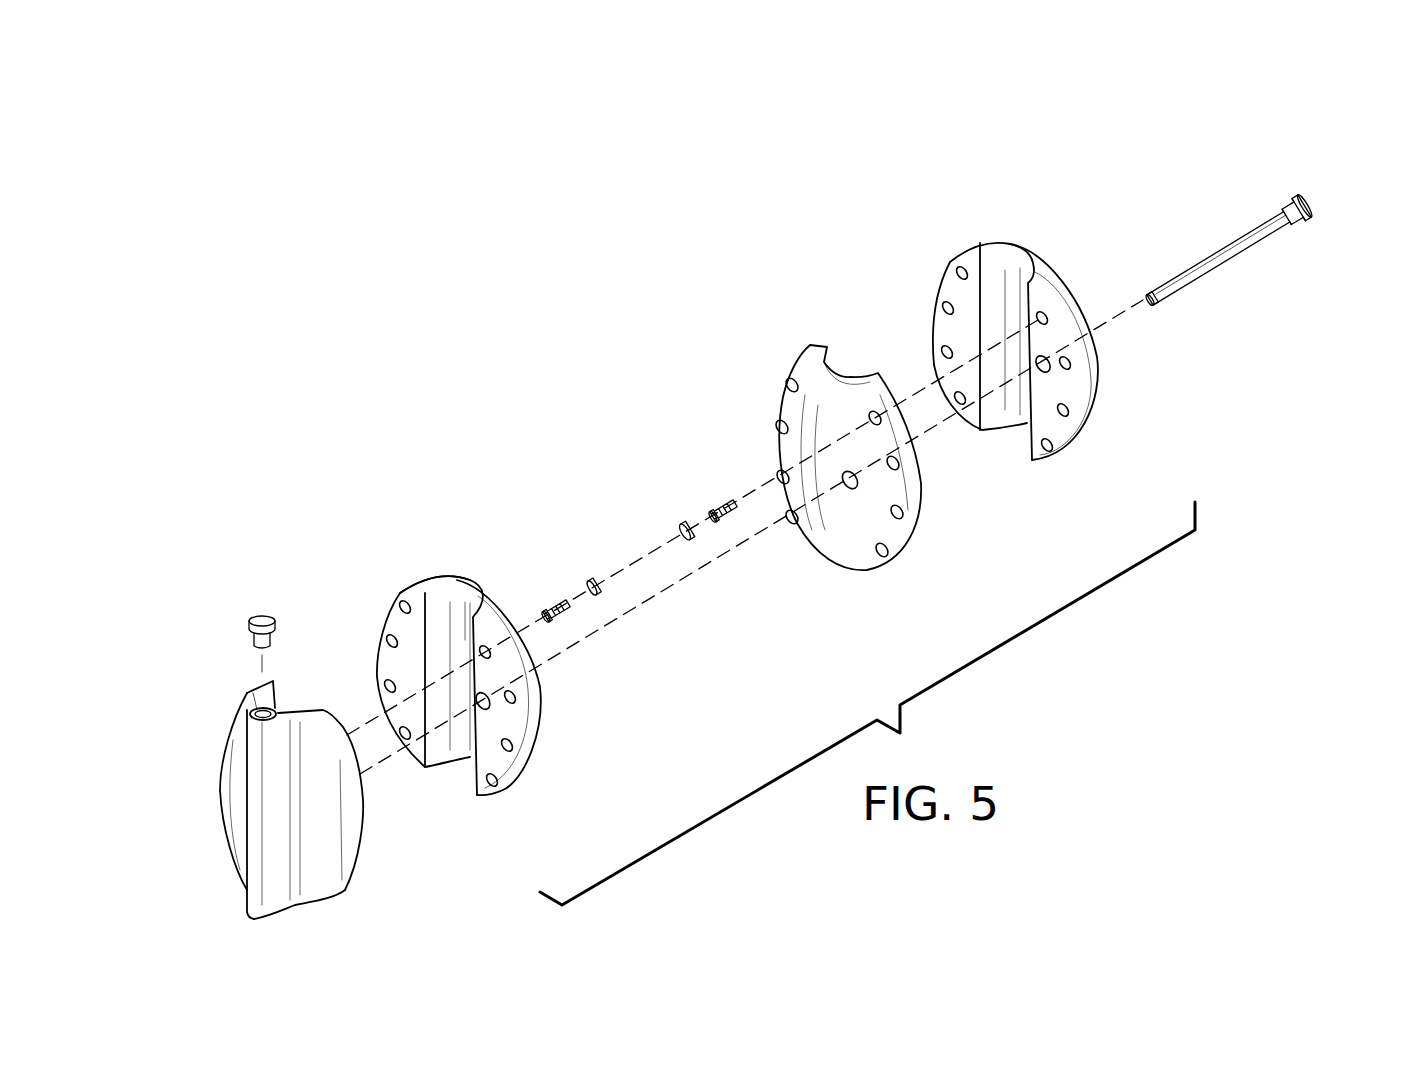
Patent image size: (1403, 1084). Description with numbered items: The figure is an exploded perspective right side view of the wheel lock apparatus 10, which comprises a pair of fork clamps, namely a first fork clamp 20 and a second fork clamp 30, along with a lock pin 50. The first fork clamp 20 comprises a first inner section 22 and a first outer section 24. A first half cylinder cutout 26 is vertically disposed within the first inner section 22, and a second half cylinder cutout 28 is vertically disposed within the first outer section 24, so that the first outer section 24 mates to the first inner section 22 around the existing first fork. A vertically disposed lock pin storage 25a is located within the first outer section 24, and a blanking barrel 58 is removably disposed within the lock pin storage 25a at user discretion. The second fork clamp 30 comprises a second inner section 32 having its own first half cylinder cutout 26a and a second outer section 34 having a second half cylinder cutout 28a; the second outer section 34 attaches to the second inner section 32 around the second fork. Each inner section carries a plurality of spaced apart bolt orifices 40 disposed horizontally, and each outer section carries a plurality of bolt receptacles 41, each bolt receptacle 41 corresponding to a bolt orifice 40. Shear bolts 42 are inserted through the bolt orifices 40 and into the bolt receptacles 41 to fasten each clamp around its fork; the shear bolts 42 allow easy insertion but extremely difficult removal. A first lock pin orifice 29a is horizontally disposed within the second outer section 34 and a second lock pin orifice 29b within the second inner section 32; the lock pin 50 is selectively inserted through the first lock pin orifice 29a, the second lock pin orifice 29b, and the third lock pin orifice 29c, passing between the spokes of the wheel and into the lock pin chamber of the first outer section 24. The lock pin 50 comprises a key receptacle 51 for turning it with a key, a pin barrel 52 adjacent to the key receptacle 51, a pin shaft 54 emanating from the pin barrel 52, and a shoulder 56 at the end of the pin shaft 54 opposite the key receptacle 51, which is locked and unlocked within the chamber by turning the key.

The wheel lock apparatus 10 is at (535, 345).
The first fork clamp 20 is at (318, 548).
The first inner section 22 is at (423, 593).
The first outer section 24 is at (244, 710).
The lock pin storage 25a is at (255, 716).
The first half cylinder cutout 26 is at (435, 617).
The first half cylinder cutout 26a is at (851, 358).
The second half cylinder cutout 28 is at (286, 692).
The second half cylinder cutout 28a is at (1012, 265).
The first lock pin orifice 29a is at (1041, 371).
The second lock pin orifice 29b is at (850, 487).
The third lock pin orifice 29c is at (483, 707).
The second fork clamp 30 is at (895, 228).
The second inner section 32 is at (812, 348).
The second outer section 34 is at (979, 260).
The bolt orifices 40 is at (388, 686).
The bolt receptacles 41 is at (1046, 318).
The shear bolts 42 is at (549, 583).
The lock pin 50 is at (1246, 265).
The key receptacle 51 is at (1335, 190).
The pin barrel 52 is at (1308, 214).
The pin shaft 54 is at (1212, 272).
The shoulder 56 is at (1151, 310).
The blanking barrel 58 is at (257, 620).